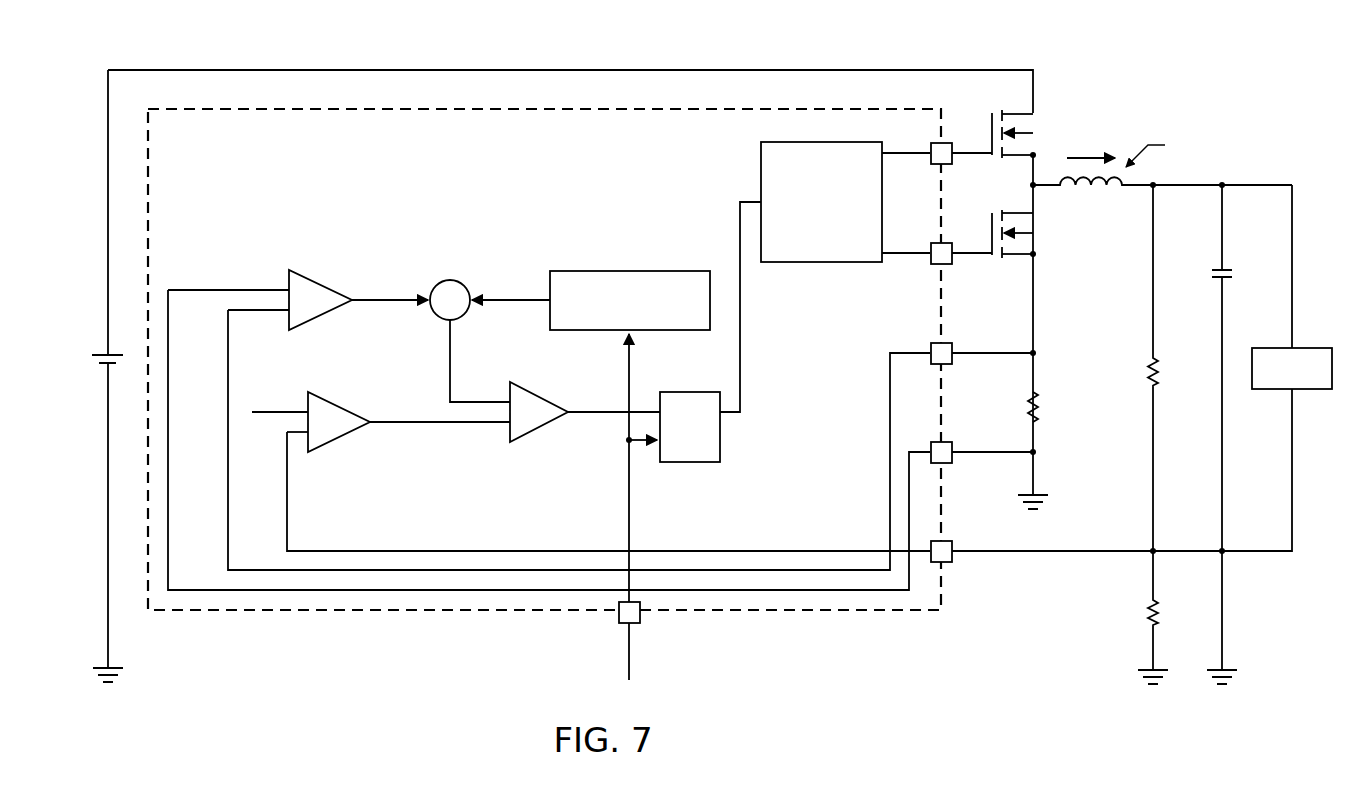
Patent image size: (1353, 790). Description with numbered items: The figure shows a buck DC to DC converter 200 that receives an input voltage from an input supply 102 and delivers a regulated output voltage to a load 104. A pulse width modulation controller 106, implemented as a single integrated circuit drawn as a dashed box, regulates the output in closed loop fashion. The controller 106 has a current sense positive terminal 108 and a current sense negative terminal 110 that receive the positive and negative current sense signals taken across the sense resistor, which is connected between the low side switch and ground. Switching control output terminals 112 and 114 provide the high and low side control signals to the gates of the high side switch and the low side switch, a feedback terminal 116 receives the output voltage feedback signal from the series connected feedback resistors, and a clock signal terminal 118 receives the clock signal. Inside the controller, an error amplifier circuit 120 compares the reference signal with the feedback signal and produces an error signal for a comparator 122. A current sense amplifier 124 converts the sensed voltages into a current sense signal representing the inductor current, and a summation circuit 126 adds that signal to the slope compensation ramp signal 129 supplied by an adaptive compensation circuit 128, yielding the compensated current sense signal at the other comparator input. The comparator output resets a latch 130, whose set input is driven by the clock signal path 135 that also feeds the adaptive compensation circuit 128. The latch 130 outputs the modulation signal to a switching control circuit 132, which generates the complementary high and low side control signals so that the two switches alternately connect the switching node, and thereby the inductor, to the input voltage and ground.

The buck DC to DC converter 200 is at (1206, 86).
The input supply 102 is at (96, 338).
The load 104 is at (1313, 347).
The PWM controller 106 is at (343, 611).
The current sense positive terminal 108 is at (953, 359).
The current sense negative terminal 110 is at (953, 458).
The switching control output terminal 112 is at (946, 140).
The switching control output terminal 114 is at (953, 259).
The feedback terminal 116 is at (953, 557).
The clock signal terminal 118 is at (618, 614).
The error amplifier circuit 120 is at (337, 437).
The PWM comparator 122 is at (545, 425).
The current sense amplifier 124 is at (320, 285).
The summation circuit 126 is at (437, 286).
The adaptive compensation circuit 128 is at (620, 270).
The ramp signal 129 is at (517, 306).
The PWM latch 130 is at (690, 462).
The switching control circuit 132 is at (804, 243).
The clock signal line 135 is at (628, 376).